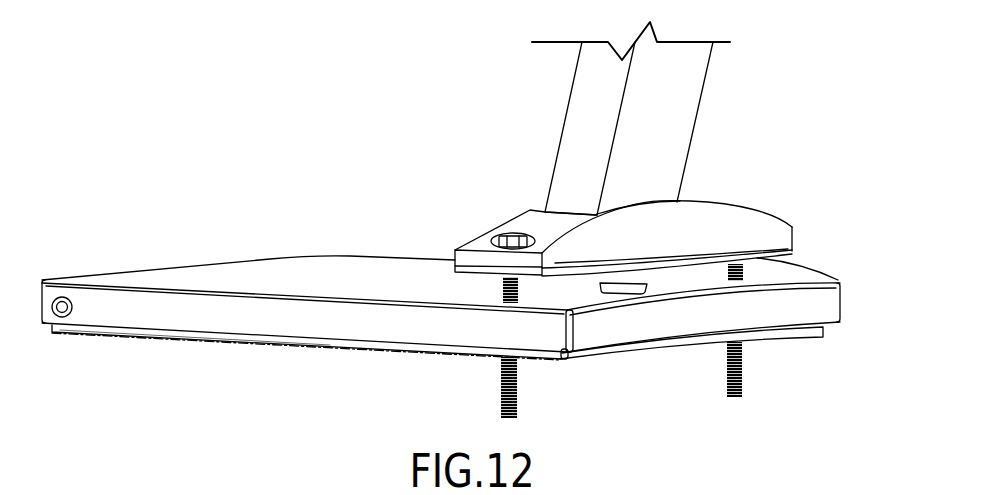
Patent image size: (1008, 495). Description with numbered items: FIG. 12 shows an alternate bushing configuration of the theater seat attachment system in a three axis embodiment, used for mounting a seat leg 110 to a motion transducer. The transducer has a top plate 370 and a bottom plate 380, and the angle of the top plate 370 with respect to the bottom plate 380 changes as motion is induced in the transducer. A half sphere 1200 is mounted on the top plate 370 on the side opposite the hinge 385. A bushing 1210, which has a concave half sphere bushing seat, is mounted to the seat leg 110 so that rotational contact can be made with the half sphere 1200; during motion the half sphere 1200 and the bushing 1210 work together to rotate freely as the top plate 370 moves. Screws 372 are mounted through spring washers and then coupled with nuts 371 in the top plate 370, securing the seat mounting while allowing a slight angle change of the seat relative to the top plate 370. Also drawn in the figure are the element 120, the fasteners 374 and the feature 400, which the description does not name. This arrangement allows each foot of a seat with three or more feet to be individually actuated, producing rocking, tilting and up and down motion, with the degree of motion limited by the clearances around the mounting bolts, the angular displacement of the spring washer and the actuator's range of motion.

The seat leg 110 is at (675, 124).
The base 120 is at (227, 320).
The top plate 370 is at (327, 268).
The nut 371 is at (500, 302).
The screw 372 is at (512, 238).
The bolt 374 is at (517, 393).
The bottom plate 380 is at (353, 345).
The hinge 385 is at (61, 297).
The bore 400 is at (68, 312).
The half sphere 1200 is at (622, 288).
The bushing 1210 is at (757, 256).